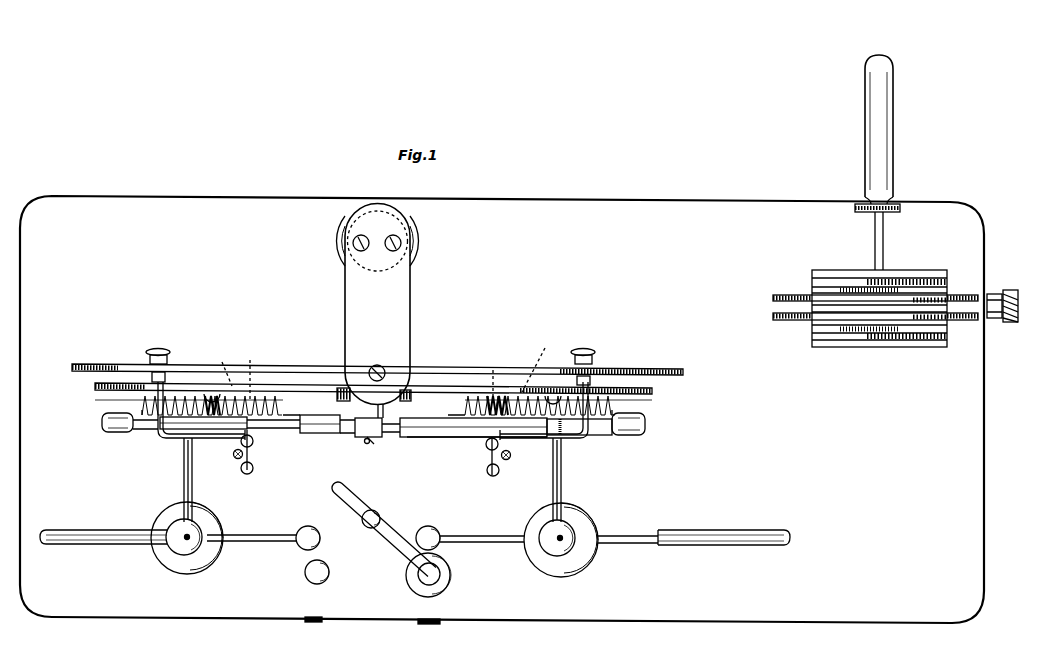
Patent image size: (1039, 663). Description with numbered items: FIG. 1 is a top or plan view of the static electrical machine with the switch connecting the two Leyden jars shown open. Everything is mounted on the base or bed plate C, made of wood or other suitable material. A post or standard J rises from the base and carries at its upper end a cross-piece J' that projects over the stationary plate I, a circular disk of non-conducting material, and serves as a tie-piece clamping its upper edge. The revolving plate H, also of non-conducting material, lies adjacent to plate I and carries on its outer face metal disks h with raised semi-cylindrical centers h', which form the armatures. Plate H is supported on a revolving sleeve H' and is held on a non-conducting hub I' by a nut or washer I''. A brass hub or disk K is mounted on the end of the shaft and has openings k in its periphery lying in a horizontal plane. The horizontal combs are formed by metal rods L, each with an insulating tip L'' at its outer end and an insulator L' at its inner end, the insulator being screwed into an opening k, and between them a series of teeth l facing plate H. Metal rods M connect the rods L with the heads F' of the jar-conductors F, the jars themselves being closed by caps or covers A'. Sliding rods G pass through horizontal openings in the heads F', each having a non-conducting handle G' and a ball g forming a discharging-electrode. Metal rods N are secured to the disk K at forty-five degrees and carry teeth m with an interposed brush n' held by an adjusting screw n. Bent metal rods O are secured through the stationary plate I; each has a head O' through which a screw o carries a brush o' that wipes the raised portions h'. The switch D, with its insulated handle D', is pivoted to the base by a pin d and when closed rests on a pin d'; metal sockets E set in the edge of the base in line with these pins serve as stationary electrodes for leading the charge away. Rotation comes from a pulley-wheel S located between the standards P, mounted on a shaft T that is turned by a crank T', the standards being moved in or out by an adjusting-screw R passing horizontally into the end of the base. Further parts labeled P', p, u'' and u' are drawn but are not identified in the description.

The base or bed plate C is at (502, 409).
The crank T' is at (891, 129).
The shaft T is at (878, 237).
The standards P is at (879, 301).
The plate P' is at (940, 323).
The plate p is at (930, 347).
The pulley-wheel S is at (773, 300).
The adjusting-screw R is at (1000, 288).
The post or standard J is at (386, 241).
The cross-piece J' is at (377, 311).
The stationary disk or plate I is at (385, 365).
The hub I' is at (335, 387).
The nut or washer I'' is at (379, 414).
The revolving disk or plate H is at (385, 398).
The revolving sleeve H' is at (349, 417).
The hub or disk K is at (377, 427).
The openings k is at (375, 447).
The screw n is at (378, 431).
The teeth m is at (374, 407).
The teeth l is at (370, 405).
The metal disks h is at (212, 389).
The raised centers h' is at (553, 390).
The brush n' is at (384, 365).
The brush o' is at (371, 413).
The screw head u'' is at (387, 353).
The nut u' is at (385, 382).
The metal rods L is at (367, 420).
The insulating tip or head L'' is at (376, 425).
The insulator L' is at (386, 436).
The metal rods N is at (450, 440).
The enlargement or head O' is at (369, 452).
The metal rods O is at (376, 455).
The screw o is at (370, 471).
The metal rods M is at (386, 480).
The enlargements or heads F' is at (187, 538).
The jar-conductors F is at (561, 540).
The cap or cover A' is at (386, 517).
The handle G' is at (415, 526).
The sliding rods G is at (432, 528).
The ball or enlargement g is at (372, 528).
The pin or screw d' is at (330, 572).
The switch D is at (384, 529).
The insulated handle or finger-piece D' is at (387, 514).
The pin or screw d is at (446, 575).
The metal sockets E is at (372, 632).